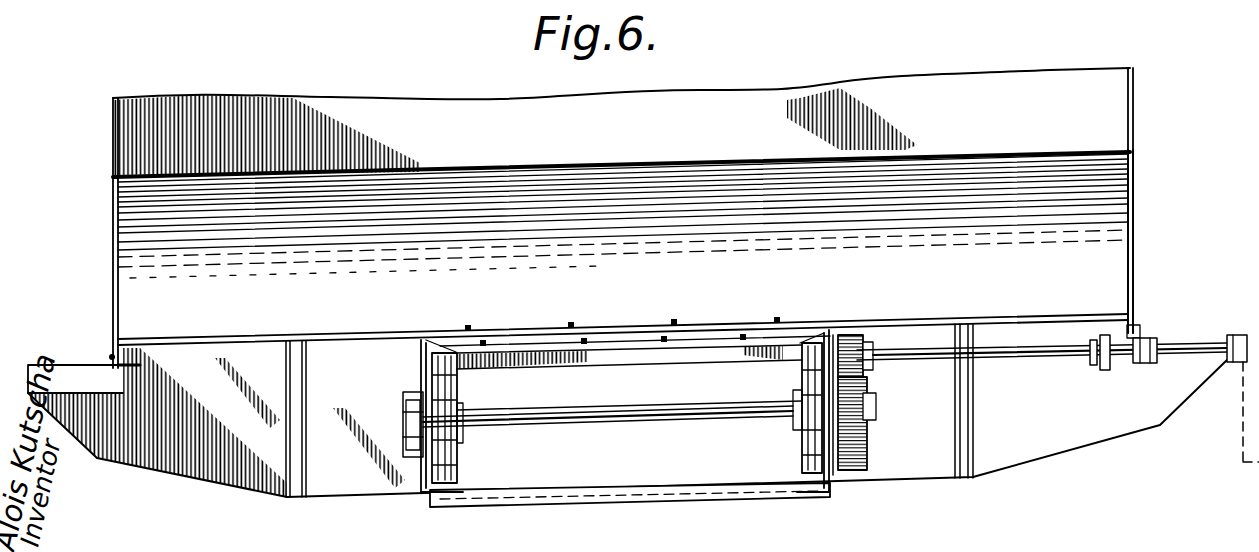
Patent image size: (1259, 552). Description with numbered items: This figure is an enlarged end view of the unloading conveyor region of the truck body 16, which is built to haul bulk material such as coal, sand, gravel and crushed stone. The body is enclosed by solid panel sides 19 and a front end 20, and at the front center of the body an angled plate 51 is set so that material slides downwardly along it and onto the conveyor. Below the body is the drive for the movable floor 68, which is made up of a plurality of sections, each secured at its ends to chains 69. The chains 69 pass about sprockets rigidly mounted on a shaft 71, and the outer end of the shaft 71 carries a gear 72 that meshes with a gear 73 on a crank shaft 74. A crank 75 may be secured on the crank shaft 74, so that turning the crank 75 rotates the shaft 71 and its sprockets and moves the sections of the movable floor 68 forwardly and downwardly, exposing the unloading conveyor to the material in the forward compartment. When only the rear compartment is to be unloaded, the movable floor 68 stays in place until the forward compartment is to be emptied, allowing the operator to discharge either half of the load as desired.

The truck body 16 is at (1140, 91).
The solid panel sides 19 is at (113, 147).
The front end 20 is at (996, 85).
The plate 51 is at (778, 281).
The movable floor 68 is at (720, 357).
The chains 69 is at (448, 470).
The shaft 71 is at (684, 421).
The gear 72 is at (866, 440).
The gear 73 is at (860, 335).
The crank shaft 74 is at (1040, 362).
The crank 75 is at (1240, 423).